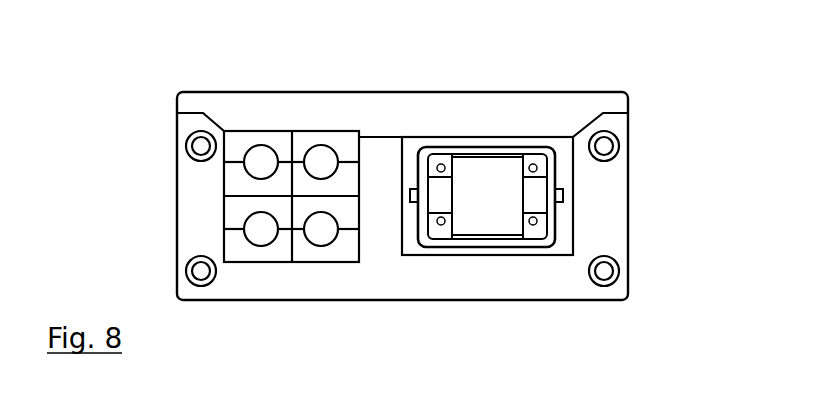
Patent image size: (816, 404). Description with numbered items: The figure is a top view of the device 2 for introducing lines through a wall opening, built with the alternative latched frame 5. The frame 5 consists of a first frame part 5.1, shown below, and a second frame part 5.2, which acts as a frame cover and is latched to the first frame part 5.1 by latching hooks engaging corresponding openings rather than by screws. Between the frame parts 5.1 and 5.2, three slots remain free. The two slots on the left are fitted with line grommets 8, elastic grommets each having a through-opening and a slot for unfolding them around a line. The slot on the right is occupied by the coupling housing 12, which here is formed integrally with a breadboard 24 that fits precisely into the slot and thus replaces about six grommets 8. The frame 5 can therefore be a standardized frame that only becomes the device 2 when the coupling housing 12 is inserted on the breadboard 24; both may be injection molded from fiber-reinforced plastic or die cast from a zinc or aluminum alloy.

The device 2 is at (140, 70).
The frame 5 is at (182, 197).
The first frame part 5.1 is at (603, 232).
The second frame part 5.2 is at (548, 110).
The line grommet 8 is at (278, 210).
The coupling housing 12 is at (469, 151).
The breadboard 24 is at (476, 250).